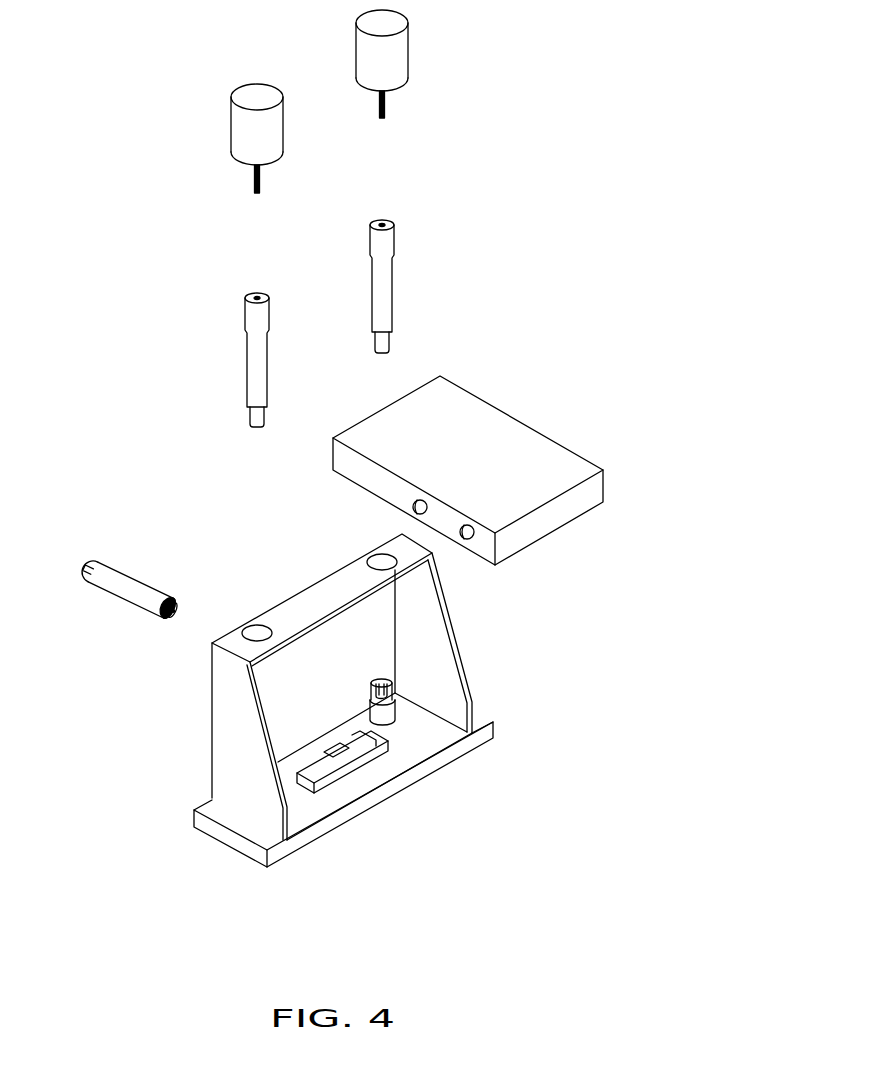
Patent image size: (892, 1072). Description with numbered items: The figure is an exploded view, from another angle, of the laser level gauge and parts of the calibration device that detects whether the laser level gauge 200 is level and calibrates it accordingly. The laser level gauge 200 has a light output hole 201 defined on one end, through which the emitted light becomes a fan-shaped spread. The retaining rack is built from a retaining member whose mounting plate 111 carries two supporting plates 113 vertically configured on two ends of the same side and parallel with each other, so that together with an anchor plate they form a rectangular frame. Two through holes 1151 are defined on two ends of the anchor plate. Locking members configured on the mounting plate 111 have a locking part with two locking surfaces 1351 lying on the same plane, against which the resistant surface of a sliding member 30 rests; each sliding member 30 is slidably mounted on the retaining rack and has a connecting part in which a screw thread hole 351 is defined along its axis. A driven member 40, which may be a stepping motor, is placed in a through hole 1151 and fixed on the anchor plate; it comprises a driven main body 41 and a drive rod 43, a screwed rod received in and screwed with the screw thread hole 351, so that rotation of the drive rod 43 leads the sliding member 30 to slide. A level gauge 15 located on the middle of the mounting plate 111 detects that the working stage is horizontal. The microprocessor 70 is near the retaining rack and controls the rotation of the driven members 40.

The driven member 40 is at (375, 101).
The driven main body 41 is at (388, 60).
The drive rod 43 is at (429, 105).
The sliding member 30 is at (366, 310).
The screw thread hole 351 is at (387, 221).
The microprocessor 70 is at (485, 435).
The supporting plate 113 is at (288, 674).
The through hole 1151 is at (380, 562).
The mounting plate 111 is at (252, 836).
The locking surface 1351 is at (380, 678).
The level gauge 15 is at (348, 757).
The laser level gauge 200 is at (108, 608).
The light output hole 201 is at (175, 615).